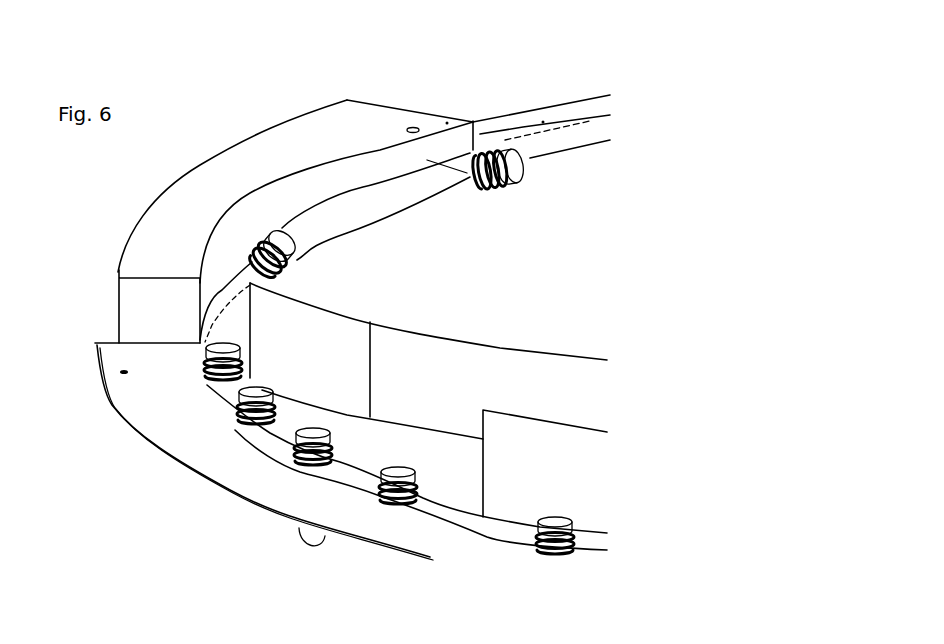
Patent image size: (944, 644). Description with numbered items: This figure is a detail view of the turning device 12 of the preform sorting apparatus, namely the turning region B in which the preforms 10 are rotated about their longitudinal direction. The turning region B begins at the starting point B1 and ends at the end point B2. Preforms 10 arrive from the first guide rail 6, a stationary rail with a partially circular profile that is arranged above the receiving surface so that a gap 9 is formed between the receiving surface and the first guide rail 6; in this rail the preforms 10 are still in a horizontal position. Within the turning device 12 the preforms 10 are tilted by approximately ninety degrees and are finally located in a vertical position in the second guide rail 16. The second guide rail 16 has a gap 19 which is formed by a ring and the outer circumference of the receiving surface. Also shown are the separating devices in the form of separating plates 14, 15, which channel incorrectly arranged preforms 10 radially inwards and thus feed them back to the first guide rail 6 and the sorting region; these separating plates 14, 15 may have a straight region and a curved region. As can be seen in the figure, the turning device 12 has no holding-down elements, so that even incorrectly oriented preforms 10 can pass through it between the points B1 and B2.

The first guide rail 6 is at (561, 100).
The gap 9 is at (593, 137).
The preforms 10 is at (507, 142).
The turning device 12 is at (238, 170).
The separating plate 14 is at (380, 320).
The separating plate 15 is at (527, 450).
The second guide rail 16 is at (242, 475).
The gap 19 is at (333, 480).
The turning region B is at (207, 150).
The starting point of the turning region B1 is at (471, 107).
The end point of the turning region B2 is at (182, 336).